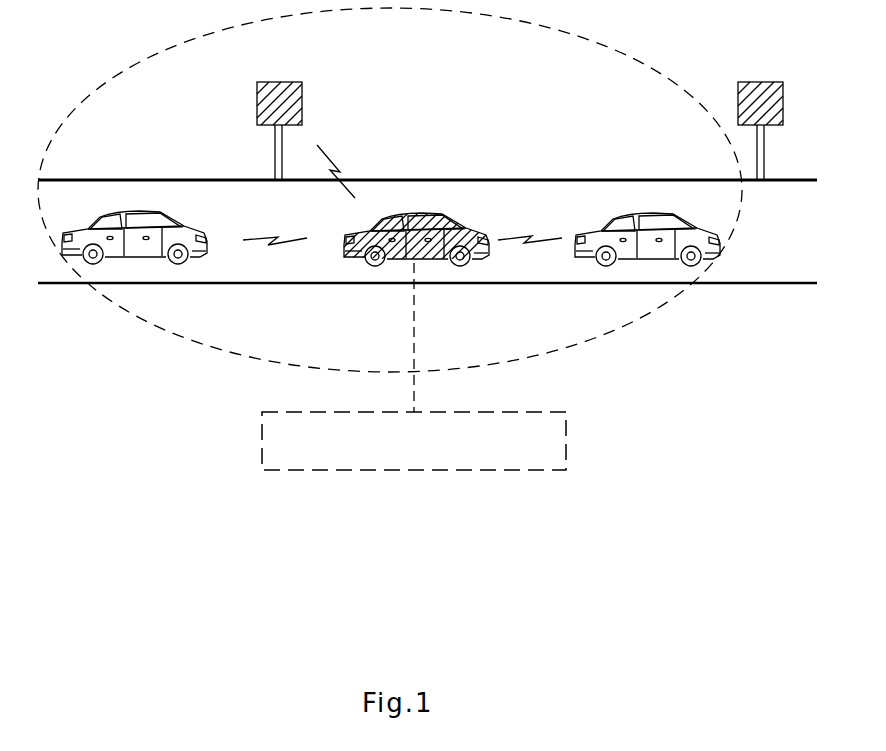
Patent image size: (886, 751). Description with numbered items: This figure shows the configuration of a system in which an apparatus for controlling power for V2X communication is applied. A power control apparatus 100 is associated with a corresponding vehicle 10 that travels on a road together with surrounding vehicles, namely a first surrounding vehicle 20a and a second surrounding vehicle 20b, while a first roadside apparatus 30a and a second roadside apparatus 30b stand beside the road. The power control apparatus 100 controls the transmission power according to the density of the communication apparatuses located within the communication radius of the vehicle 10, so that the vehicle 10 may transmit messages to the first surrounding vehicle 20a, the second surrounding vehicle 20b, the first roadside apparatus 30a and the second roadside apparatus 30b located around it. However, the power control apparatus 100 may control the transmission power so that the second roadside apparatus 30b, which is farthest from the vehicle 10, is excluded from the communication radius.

The vehicle 10 is at (408, 207).
The first surrounding vehicle 20a is at (638, 207).
The second surrounding vehicle 20b is at (118, 201).
The first roadside apparatus 30a is at (279, 73).
The second roadside apparatus 30b is at (760, 73).
The power control apparatus 100 is at (567, 425).